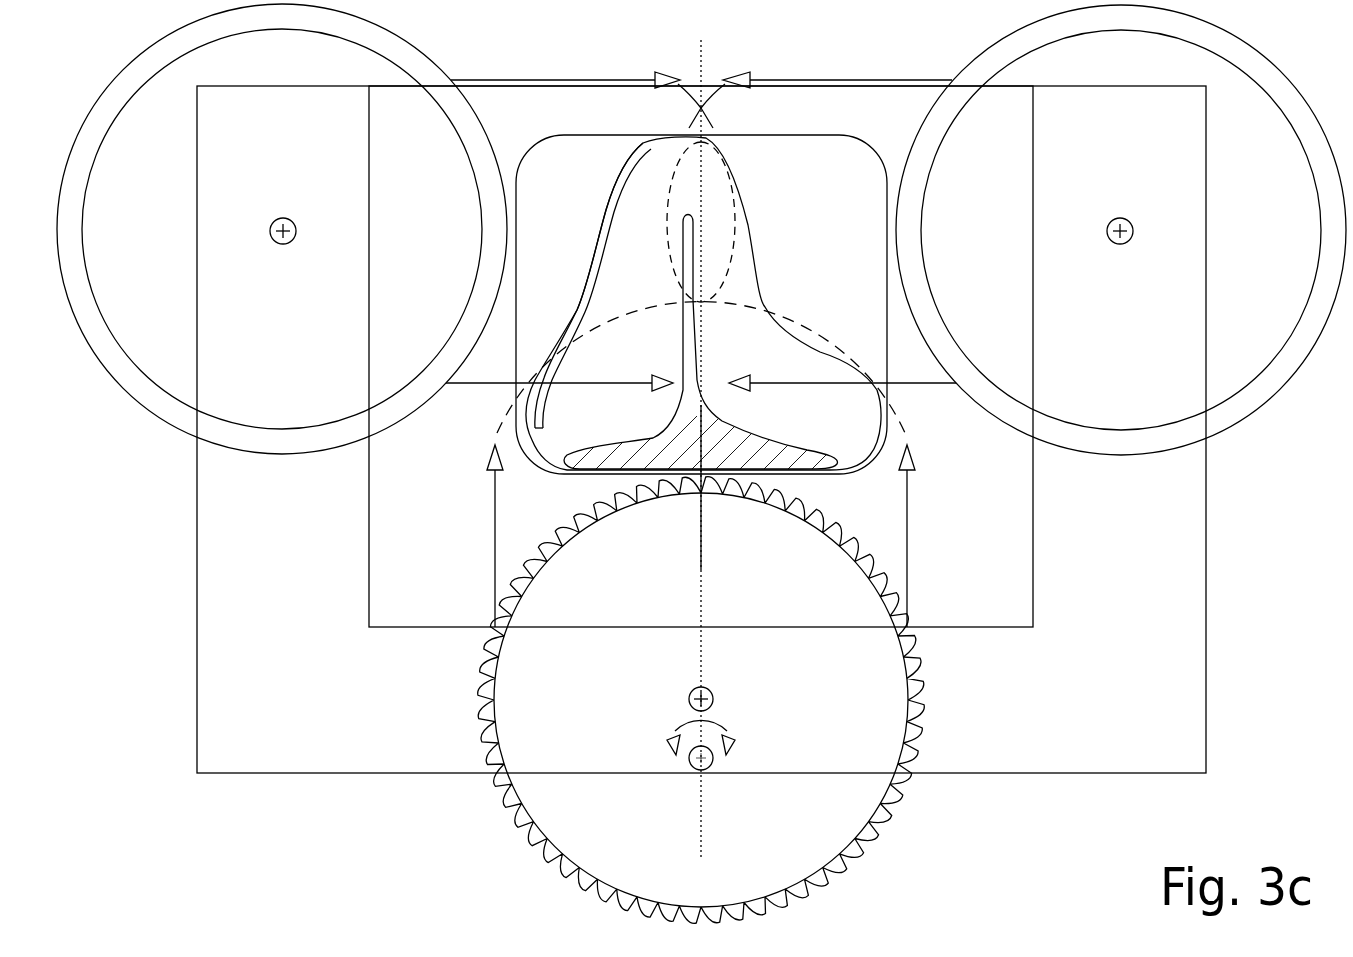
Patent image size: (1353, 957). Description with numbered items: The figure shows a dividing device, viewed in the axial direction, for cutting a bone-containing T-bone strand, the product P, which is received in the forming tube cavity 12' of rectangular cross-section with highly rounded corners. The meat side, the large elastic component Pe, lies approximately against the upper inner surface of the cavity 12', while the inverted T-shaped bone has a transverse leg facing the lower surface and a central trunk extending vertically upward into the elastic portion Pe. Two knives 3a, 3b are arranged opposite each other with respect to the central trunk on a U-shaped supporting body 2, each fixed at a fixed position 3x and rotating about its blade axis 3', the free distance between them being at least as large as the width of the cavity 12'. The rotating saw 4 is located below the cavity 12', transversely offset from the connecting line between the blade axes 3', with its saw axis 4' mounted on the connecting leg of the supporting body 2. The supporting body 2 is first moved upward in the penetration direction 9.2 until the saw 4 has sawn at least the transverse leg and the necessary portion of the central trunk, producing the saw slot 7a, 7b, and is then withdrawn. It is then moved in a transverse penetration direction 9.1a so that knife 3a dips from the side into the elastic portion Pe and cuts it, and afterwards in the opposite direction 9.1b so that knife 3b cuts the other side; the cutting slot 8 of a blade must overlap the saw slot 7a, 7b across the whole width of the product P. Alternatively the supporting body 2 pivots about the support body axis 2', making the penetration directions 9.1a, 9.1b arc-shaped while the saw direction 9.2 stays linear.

The supporting body 2 is at (701, 429).
The support body axis 2' is at (718, 778).
The axis of rotation of blade 3' is at (310, 208).
The fixed position of blade 3x is at (1122, 219).
The first knife 3a is at (147, 448).
The second knife 3b is at (1264, 434).
The saw 4 is at (658, 700).
The saw axis 4' is at (743, 677).
The first half mold 7a is at (735, 220).
The second half mold 7b is at (670, 181).
The cutting slot 8 is at (792, 324).
The direction of penetration 9.1a is at (534, 81).
The direction of penetration 9.1b is at (838, 82).
The penetration direction 9.2 is at (493, 515).
The forming tube cavity 12' is at (701, 304).
The product P is at (587, 240).
The elastic component Pe is at (707, 353).